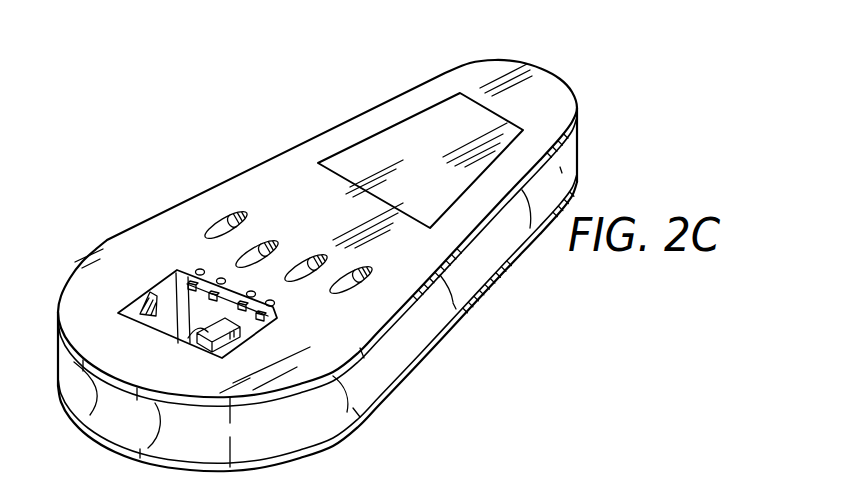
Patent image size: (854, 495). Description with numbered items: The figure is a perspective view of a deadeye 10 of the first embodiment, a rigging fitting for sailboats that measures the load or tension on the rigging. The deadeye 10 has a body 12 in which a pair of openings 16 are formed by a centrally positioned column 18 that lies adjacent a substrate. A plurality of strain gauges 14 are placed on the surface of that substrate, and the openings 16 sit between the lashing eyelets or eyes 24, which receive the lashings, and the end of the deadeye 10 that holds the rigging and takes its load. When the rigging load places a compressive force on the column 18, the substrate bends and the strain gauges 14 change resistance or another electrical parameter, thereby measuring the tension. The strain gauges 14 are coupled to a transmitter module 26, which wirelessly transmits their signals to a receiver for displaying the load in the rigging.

The deadeye 10 is at (467, 331).
The body 12 is at (321, 145).
The strain gauges 14 is at (187, 272).
The openings 16 is at (150, 312).
The column 18 is at (187, 343).
The lashing eyelets 24 is at (244, 213).
The transmitter module 26 is at (418, 135).